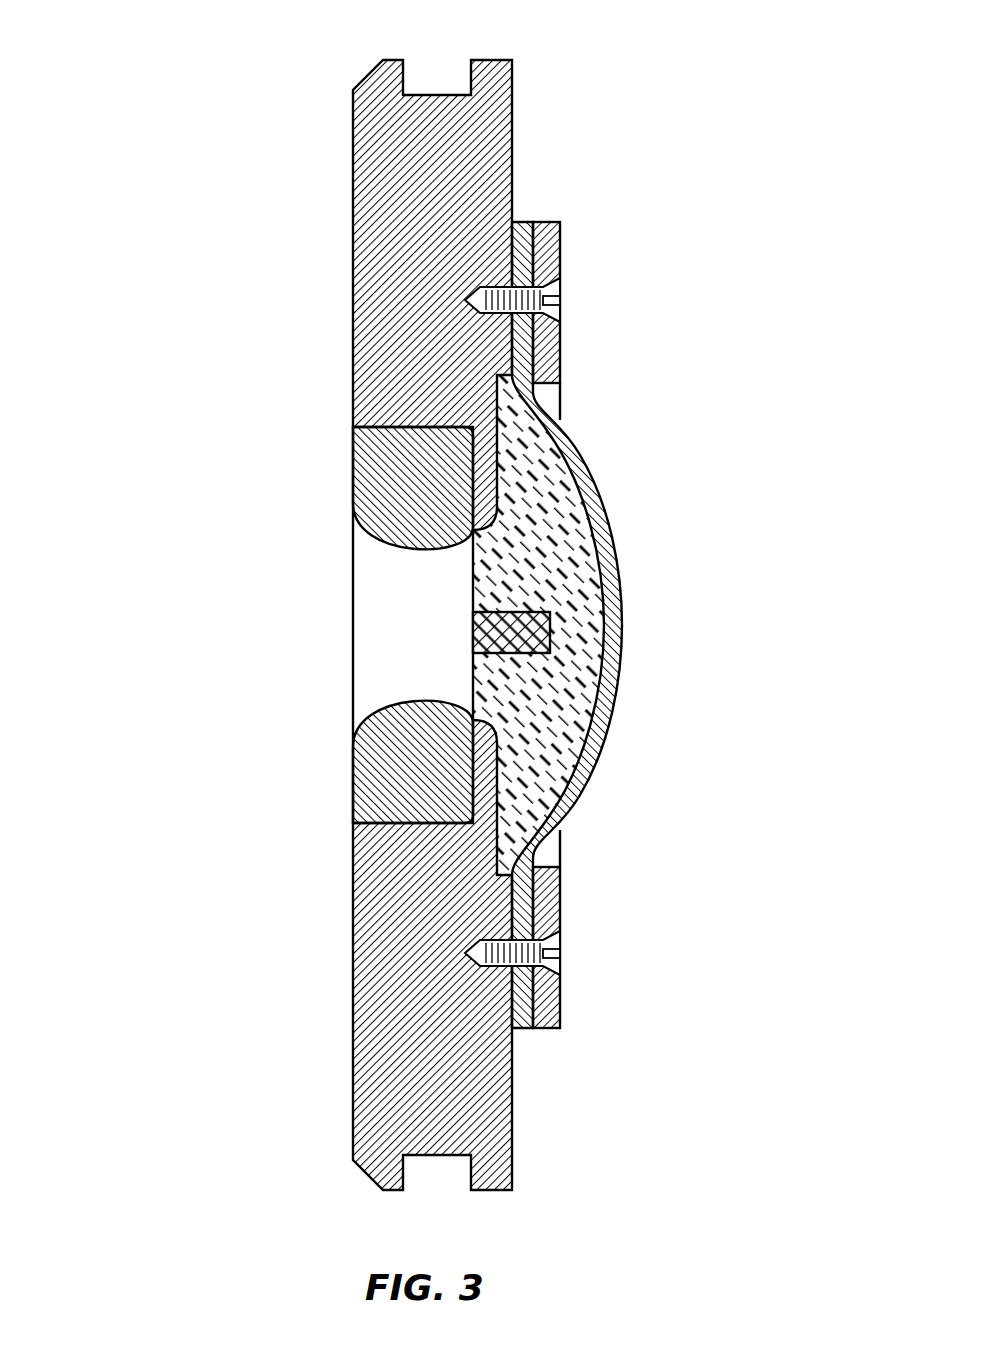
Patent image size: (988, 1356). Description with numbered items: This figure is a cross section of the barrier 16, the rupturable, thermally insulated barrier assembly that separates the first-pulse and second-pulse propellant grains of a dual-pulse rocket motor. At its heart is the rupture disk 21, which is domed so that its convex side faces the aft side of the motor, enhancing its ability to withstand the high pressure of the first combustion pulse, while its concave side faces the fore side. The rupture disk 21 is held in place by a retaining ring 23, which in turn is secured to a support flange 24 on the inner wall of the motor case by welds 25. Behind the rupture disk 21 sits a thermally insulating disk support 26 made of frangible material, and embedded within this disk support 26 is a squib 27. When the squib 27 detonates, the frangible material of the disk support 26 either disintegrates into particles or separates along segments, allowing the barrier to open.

The barrier 16 is at (120, 58).
The rupture disk 21 is at (595, 485).
The retaining ring 23 is at (560, 246).
The support flange 24 is at (515, 130).
The welds 25 is at (560, 298).
The disk support 26 is at (557, 677).
The squib 27 is at (473, 617).